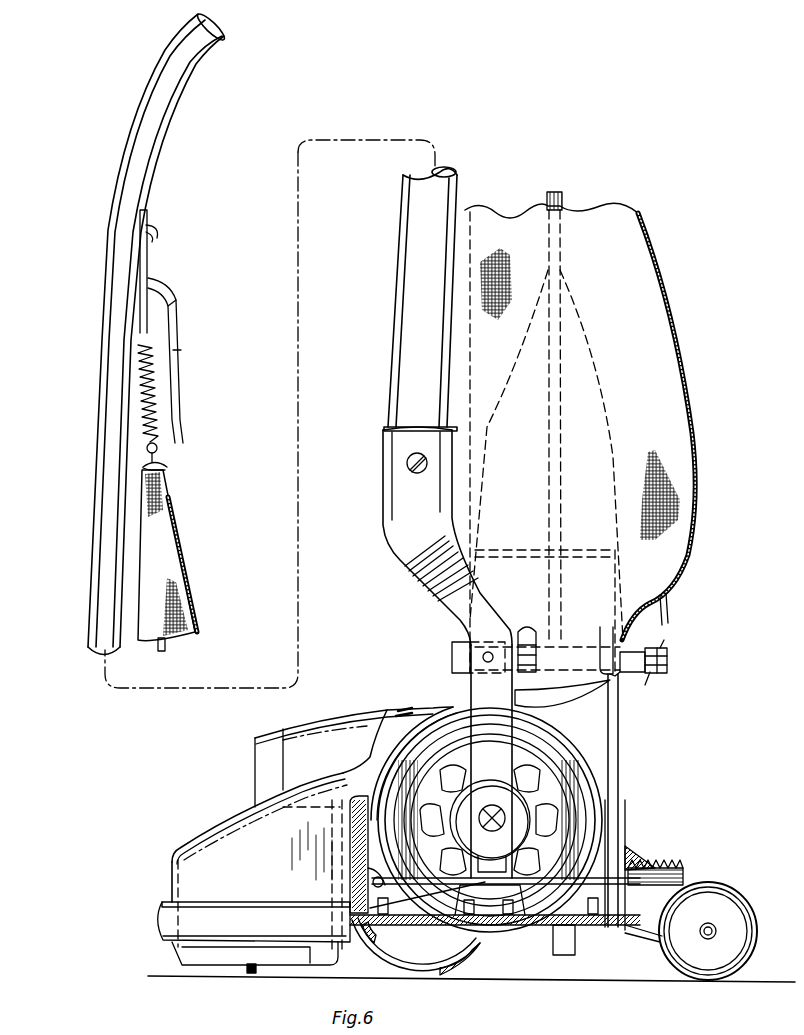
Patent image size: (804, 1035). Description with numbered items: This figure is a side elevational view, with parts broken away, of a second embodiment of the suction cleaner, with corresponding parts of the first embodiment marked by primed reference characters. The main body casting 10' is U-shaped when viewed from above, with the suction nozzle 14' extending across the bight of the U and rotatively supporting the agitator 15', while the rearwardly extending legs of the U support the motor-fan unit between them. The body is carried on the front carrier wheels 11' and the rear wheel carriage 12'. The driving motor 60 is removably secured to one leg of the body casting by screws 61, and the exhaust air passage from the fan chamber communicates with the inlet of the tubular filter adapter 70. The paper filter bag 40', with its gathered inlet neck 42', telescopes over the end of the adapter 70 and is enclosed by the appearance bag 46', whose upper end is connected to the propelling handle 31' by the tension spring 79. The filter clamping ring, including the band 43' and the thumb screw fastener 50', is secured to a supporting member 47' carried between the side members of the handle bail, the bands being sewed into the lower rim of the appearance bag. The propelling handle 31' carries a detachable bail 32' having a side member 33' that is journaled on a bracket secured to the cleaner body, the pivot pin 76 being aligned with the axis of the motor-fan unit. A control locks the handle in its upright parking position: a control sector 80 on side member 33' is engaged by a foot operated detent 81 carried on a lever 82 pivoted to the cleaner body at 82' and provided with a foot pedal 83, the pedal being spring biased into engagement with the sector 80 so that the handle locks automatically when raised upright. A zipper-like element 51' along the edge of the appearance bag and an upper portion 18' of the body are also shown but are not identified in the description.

The propelling handle 31' is at (249, 333).
The tension spring 79 is at (163, 437).
The appearance bag 46' is at (409, 409).
The zipper fastener 51' is at (441, 426).
The paper filter bag 40' is at (390, 420).
The detachable bail 32' is at (447, 536).
The side member 33' is at (491, 761).
The supporting member 47' is at (470, 650).
The inlet neck 42' is at (568, 611).
The tubular filter adapter 70 is at (610, 684).
The metal band 43' is at (655, 646).
The thumb screw fastener 50' is at (685, 660).
The driving motor 60 is at (490, 820).
The pivot pin 76 is at (506, 812).
The control sector 80 is at (492, 829).
The upper cover 18' is at (354, 757).
The main body casting 10' is at (314, 828).
The suction nozzle 14' is at (254, 952).
The agitator 15' is at (244, 983).
The pivot 82' is at (339, 864).
The foot operated detent 81 is at (495, 901).
The front carrier wheels 11' is at (416, 946).
The screws 61 is at (590, 928).
The lever 82 is at (629, 844).
The foot pedal 83 is at (680, 866).
The rear wheel carriage 12' is at (691, 931).